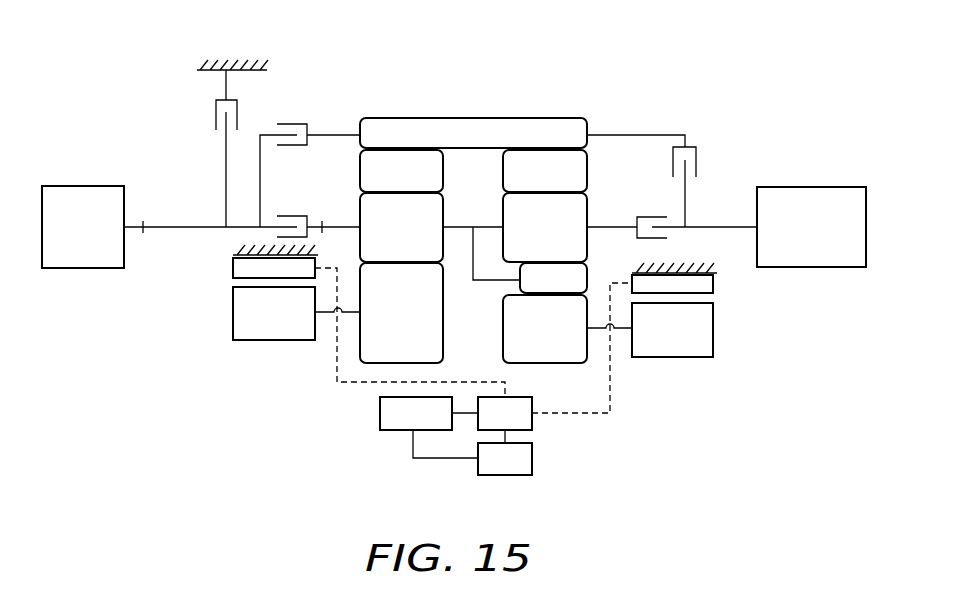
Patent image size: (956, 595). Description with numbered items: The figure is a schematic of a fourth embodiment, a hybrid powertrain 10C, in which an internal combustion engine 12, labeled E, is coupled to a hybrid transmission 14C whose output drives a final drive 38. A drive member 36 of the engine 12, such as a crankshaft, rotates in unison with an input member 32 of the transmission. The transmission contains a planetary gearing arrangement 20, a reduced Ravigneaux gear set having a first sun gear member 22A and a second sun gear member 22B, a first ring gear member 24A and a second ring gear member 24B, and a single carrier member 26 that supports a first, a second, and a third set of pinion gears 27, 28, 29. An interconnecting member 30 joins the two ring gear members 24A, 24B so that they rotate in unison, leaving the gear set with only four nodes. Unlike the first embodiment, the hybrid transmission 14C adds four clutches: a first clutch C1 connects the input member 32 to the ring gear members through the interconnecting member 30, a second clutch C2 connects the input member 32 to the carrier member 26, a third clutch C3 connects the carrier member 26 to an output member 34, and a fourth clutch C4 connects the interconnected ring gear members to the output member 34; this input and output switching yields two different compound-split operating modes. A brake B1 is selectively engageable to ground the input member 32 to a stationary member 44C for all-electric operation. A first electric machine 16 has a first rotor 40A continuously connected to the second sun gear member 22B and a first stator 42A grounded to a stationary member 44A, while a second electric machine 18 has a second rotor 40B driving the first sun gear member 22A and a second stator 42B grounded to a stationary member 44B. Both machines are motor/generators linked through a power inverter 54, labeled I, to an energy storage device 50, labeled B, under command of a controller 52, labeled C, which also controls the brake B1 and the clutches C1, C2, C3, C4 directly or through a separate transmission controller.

The powertrain 10C is at (140, 51).
The internal combustion engine 12 is at (95, 186).
The hybrid transmission 14C is at (336, 401).
The first electric machine 16 is at (730, 336).
The second electric machine 18 is at (212, 302).
The planetary gearing arrangement 20 is at (354, 114).
The first sun gear member 22A is at (401, 313).
The second sun gear member 22B is at (545, 329).
The first ring gear member 24A is at (401, 171).
The second ring gear member 24B is at (545, 171).
The carrier member 26 is at (350, 224).
The first set of pinion gears 27 is at (401, 227).
The second set of pinion gears 28 is at (545, 227).
The third set of pinion gears 29 is at (553, 278).
The interconnecting member 30 is at (478, 118).
The input member 32 is at (213, 225).
The output member 34 is at (747, 225).
The drive member 36 is at (170, 225).
The final drive 38 is at (811, 227).
The first rotor 40A is at (672, 330).
The second rotor 40B is at (274, 313).
The first stator 42A is at (713, 294).
The second stator 42B is at (233, 268).
The stationary member 44A is at (715, 275).
The stationary member 44B is at (236, 253).
The stationary member 44C is at (213, 68).
The energy storage device 50 is at (380, 413).
The controller 52 is at (532, 460).
The power inverter 54 is at (532, 420).
The brake B1 is at (204, 118).
The first clutch C1 is at (270, 120).
The second clutch C2 is at (270, 212).
The third clutch C3 is at (680, 233).
The fourth clutch C4 is at (693, 190).